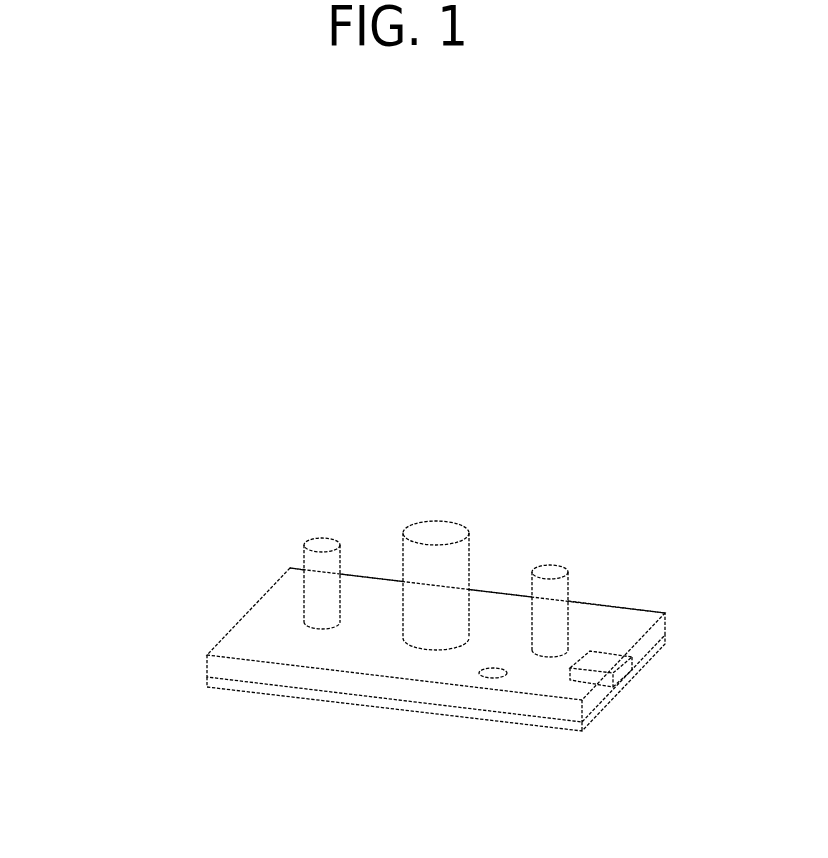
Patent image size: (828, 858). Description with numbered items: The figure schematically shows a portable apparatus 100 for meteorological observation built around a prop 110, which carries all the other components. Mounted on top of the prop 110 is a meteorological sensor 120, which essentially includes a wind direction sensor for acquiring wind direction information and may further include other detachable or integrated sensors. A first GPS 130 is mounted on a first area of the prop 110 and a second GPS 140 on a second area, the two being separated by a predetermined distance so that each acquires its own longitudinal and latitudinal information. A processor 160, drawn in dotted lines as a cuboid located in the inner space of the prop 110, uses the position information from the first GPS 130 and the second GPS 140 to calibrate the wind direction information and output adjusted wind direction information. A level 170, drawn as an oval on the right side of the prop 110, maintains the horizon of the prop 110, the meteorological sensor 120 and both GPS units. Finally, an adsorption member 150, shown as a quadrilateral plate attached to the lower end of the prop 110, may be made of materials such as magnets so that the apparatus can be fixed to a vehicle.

The portable apparatus for meteorological observation 100 is at (278, 298).
The prop 110 is at (207, 668).
The adsorption member 150 is at (207, 683).
The meteorological sensor 120 is at (432, 533).
The first GPS 130 is at (322, 545).
The second GPS 140 is at (552, 572).
The processor 160 is at (610, 660).
The level 170 is at (497, 668).